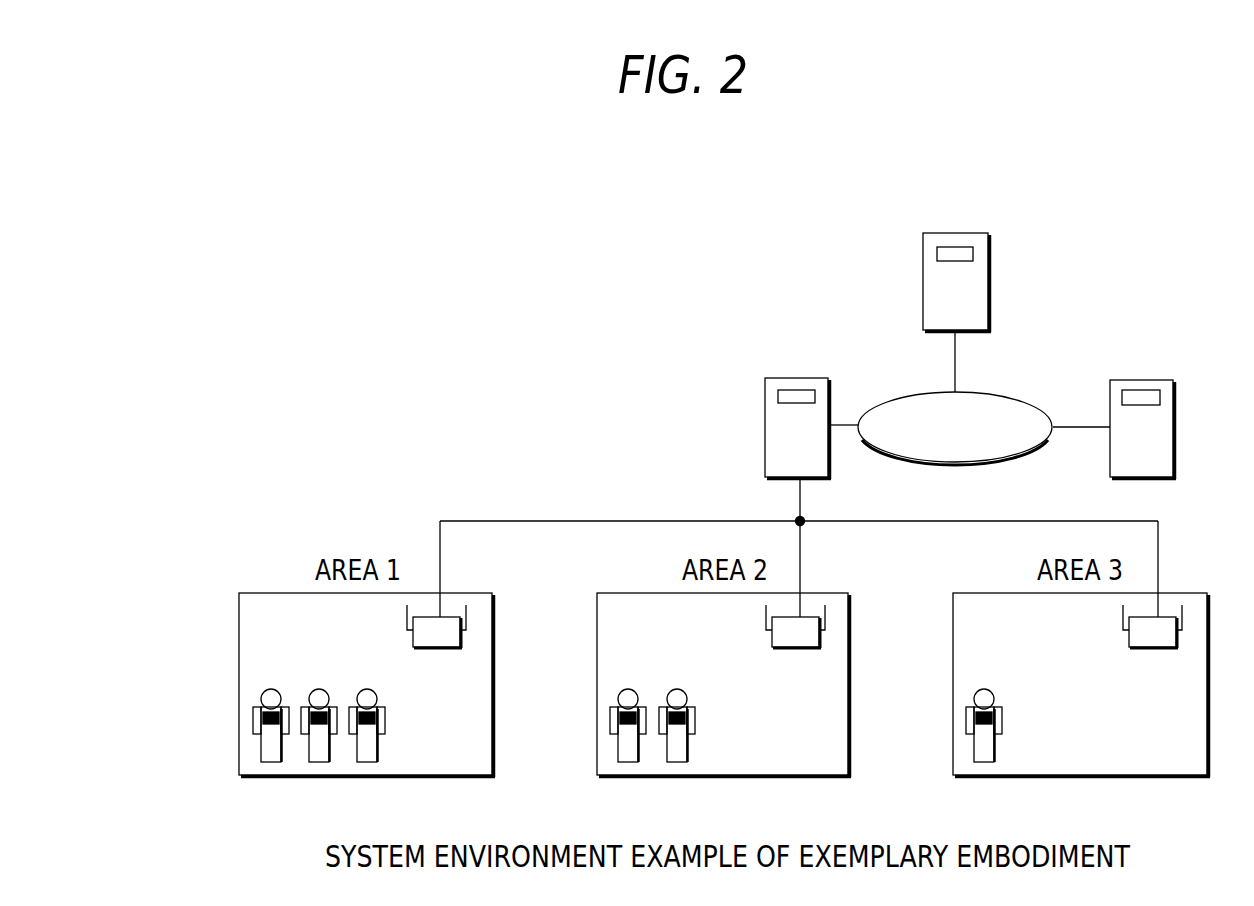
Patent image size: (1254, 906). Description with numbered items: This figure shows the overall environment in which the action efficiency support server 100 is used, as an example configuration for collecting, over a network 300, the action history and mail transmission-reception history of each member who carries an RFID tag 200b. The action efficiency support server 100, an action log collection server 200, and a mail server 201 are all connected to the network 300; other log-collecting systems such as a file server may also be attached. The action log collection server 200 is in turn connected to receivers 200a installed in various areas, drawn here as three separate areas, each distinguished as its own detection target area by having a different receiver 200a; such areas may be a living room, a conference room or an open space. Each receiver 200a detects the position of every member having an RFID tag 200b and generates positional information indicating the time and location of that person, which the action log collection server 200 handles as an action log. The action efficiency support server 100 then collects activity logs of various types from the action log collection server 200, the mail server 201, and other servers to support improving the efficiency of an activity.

The action efficiency support server 100 is at (1175, 402).
The action log collection server 200 is at (830, 397).
The mail server 201 is at (990, 252).
The network 300 is at (1013, 397).
The receiver 200a is at (447, 617).
The RFID tag 200b is at (252, 722).